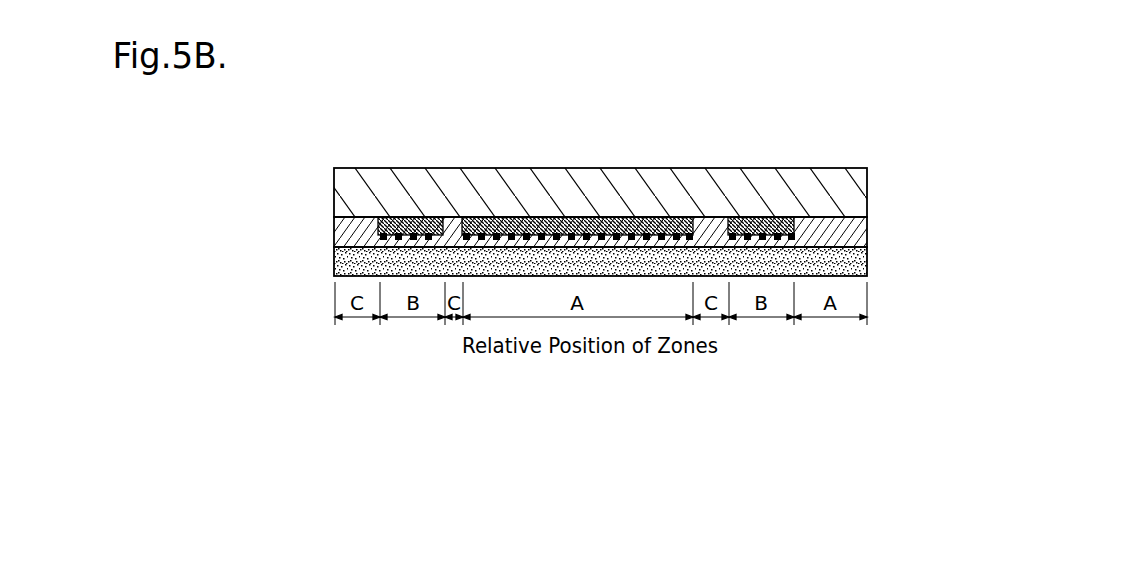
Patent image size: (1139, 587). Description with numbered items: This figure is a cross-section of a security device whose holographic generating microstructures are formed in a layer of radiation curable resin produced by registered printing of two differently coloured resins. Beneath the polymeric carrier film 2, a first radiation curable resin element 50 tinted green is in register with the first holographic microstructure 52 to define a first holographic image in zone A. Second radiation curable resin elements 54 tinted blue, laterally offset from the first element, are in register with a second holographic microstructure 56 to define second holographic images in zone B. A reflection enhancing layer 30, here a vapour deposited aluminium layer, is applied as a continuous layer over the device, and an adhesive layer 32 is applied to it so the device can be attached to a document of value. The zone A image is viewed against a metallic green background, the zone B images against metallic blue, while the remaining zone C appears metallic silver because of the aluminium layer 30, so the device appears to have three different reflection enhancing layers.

The polymeric carrier film 2 is at (392, 177).
The reflection enhancing layer 30 is at (842, 232).
The adhesive layer 32 is at (850, 262).
The first radiation curable resin element 50 is at (595, 227).
The first holographic microstructure 52 is at (498, 232).
The second radiation curable resin elements 54 is at (400, 218).
The second holographic microstructure 56 is at (412, 238).